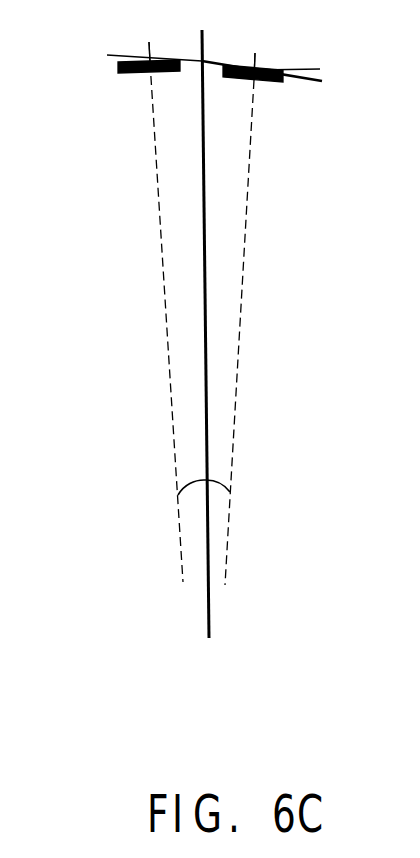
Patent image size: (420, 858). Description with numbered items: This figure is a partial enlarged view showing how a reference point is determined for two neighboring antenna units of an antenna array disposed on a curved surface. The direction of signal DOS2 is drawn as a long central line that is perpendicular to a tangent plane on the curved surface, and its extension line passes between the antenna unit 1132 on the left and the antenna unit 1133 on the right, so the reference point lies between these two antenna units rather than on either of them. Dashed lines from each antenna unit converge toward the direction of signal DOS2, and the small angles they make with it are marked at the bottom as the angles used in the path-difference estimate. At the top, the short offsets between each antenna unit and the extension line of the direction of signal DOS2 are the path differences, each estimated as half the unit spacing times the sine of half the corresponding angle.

The antenna unit 1132 is at (120, 63).
The antenna unit 1133 is at (263, 78).
The direction of signal DOS2 is at (251, 338).